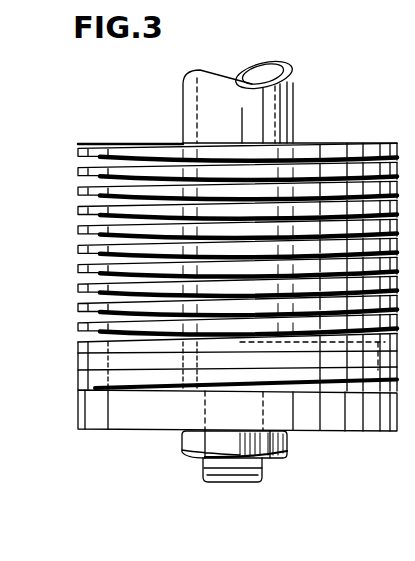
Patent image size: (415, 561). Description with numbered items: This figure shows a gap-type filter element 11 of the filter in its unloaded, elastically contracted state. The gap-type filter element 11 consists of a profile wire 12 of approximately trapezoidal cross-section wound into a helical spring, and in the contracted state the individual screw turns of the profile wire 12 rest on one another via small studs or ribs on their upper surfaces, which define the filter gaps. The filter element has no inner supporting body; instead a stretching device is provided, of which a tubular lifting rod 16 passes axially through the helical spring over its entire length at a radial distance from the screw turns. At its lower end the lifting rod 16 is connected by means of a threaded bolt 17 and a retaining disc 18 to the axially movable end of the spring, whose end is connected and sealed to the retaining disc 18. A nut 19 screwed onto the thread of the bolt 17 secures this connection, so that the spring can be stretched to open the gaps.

The gap-type filter element 11 is at (70, 217).
The profile wire 12 is at (80, 366).
The tubular lifting rod 16 is at (268, 118).
The threaded bolt 17 is at (253, 484).
The retaining disc 18 is at (137, 412).
The nut 19 is at (285, 456).